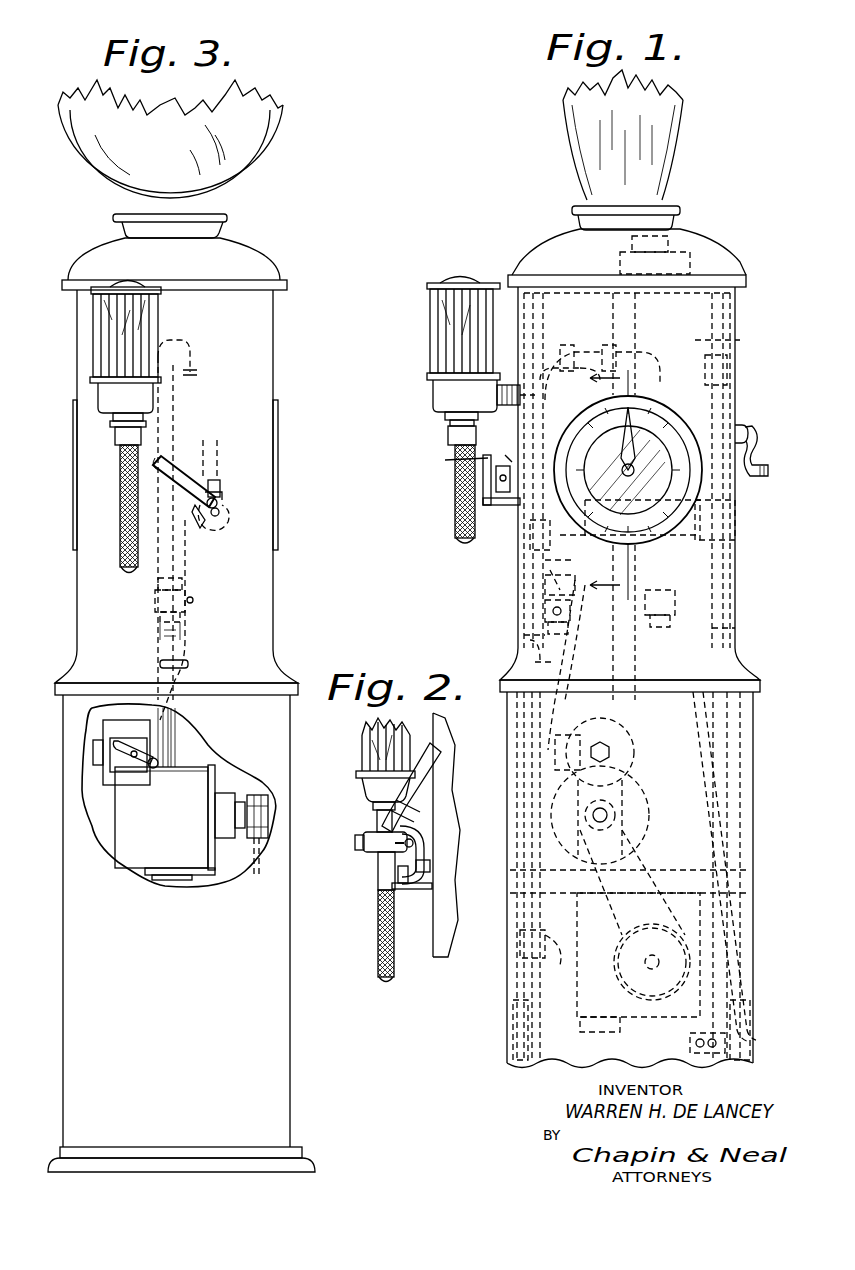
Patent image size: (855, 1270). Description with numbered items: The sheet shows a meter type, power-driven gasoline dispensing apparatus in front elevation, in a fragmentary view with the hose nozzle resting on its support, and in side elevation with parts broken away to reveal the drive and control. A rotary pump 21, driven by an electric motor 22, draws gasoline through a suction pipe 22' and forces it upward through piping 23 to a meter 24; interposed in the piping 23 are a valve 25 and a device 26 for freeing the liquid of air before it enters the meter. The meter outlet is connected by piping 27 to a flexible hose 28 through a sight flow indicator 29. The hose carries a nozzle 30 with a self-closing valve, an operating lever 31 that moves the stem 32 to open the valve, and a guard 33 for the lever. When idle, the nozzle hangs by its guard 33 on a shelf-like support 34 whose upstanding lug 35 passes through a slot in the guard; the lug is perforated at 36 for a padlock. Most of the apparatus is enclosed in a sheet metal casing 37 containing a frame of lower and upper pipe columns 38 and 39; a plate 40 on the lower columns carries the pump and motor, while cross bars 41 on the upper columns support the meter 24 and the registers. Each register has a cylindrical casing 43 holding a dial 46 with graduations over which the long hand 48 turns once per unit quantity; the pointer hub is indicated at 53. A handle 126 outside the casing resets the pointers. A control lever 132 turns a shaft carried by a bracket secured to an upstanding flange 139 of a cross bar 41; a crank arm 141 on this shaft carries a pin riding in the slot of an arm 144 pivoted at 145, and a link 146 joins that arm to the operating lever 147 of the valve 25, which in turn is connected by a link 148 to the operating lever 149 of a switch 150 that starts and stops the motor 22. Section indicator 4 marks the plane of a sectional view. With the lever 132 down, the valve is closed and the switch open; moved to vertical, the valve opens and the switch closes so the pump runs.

In FIG. 1, the section line 4 is at (612, 469).
In FIG. 1, the rotary pump 21 is at (590, 1005).
In FIG. 3, the electric motor 22 is at (191, 820).
In FIG. 1, the electric motor 22 is at (615, 815).
In FIG. 1, the suction pipe 22' is at (676, 1043).
In FIG. 3, the piping 23 is at (172, 418).
In FIG. 1, the piping 23 is at (596, 350).
In FIG. 1, the meter 24 is at (663, 613).
In FIG. 3, the valve 25 is at (155, 604).
In FIG. 1, the valve 25 is at (545, 608).
In FIG. 1, the device for freeing the liquid of air 26 is at (731, 343).
In FIG. 2, the piping 27 is at (430, 785).
In FIG. 1, the piping 27 is at (515, 405).
In FIG. 3, the flexible hose 28 is at (122, 545).
In FIG. 2, the flexible hose 28 is at (380, 952).
In FIG. 1, the flexible hose 28 is at (455, 520).
In FIG. 3, the sight flow indicator 29 is at (148, 312).
In FIG. 2, the sight flow indicator 29 is at (370, 745).
In FIG. 1, the sight flow indicator 29 is at (440, 318).
In FIG. 2, the nozzle 30 is at (370, 790).
In FIG. 2, the operating lever 31 is at (424, 860).
In FIG. 2, the stem 32 is at (413, 843).
In FIG. 2, the guard 33 is at (430, 876).
In FIG. 3, the shelf-like support 34 is at (222, 497).
In FIG. 2, the shelf-like support 34 is at (432, 886).
In FIG. 1, the shelf-like support 34 is at (505, 498).
In FIG. 3, the upstanding lug 35 is at (214, 478).
In FIG. 2, the upstanding lug 35 is at (410, 885).
In FIG. 1, the upstanding lug 35 is at (509, 472).
In FIG. 1, the perforation 36 is at (503, 448).
In FIG. 3, the sheet metal casing 37 is at (181, 933).
In FIG. 2, the sheet metal casing 37 is at (445, 935).
In FIG. 1, the sheet metal casing 37 is at (720, 710).
In FIG. 1, the lower pipe columns 38 is at (525, 1030).
In FIG. 1, the upper pipe columns 39 is at (524, 635).
In FIG. 3, the plate 40 is at (187, 880).
In FIG. 1, the plate 40 is at (630, 867).
In FIG. 1, the cross bars 41 is at (735, 515).
In FIG. 3, the cylindrical casing 43 is at (73, 520).
In FIG. 1, the cylindrical casing 43 is at (690, 430).
In FIG. 1, the dial 46 is at (655, 536).
In FIG. 1, the long hand 48 is at (639, 438).
In FIG. 1, the pointer shaft 53 is at (623, 466).
In FIG. 1, the handle 126 is at (760, 458).
In FIG. 3, the control lever 132 is at (165, 462).
In FIG. 2, the control lever 132 is at (378, 870).
In FIG. 1, the control lever 132 is at (450, 461).
In FIG. 1, the upstanding flange 139 is at (535, 535).
In FIG. 3, the crank arm 141 is at (202, 526).
In FIG. 3, the arm 144 is at (224, 525).
In FIG. 3, the pivot 145 is at (224, 512).
In FIG. 3, the link 146 is at (186, 570).
In FIG. 1, the link 146 is at (545, 572).
In FIG. 3, the operating lever 147 is at (194, 600).
In FIG. 1, the operating lever 147 is at (585, 581).
In FIG. 3, the link 148 is at (188, 666).
In FIG. 1, the link 148 is at (562, 702).
In FIG. 3, the operating lever 149 is at (137, 767).
In FIG. 1, the operating lever 149 is at (585, 744).
In FIG. 3, the switch 150 is at (123, 720).
In FIG. 1, the switch 150 is at (622, 745).